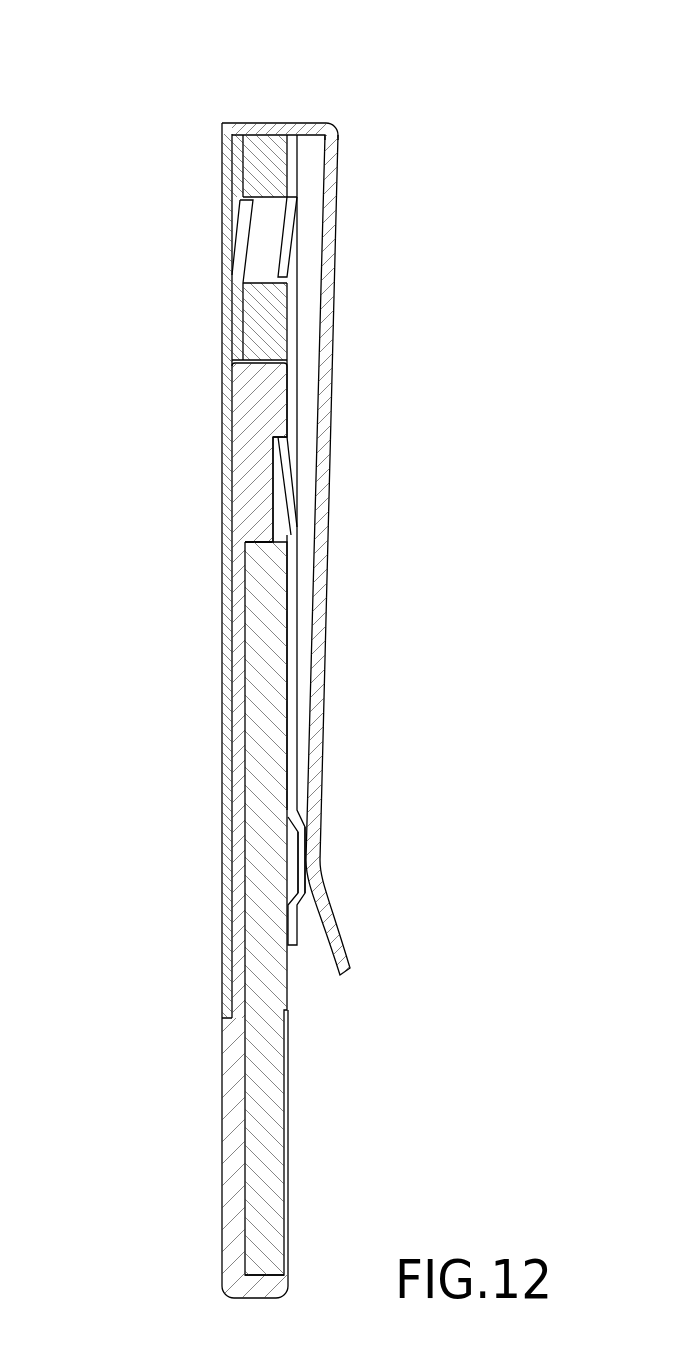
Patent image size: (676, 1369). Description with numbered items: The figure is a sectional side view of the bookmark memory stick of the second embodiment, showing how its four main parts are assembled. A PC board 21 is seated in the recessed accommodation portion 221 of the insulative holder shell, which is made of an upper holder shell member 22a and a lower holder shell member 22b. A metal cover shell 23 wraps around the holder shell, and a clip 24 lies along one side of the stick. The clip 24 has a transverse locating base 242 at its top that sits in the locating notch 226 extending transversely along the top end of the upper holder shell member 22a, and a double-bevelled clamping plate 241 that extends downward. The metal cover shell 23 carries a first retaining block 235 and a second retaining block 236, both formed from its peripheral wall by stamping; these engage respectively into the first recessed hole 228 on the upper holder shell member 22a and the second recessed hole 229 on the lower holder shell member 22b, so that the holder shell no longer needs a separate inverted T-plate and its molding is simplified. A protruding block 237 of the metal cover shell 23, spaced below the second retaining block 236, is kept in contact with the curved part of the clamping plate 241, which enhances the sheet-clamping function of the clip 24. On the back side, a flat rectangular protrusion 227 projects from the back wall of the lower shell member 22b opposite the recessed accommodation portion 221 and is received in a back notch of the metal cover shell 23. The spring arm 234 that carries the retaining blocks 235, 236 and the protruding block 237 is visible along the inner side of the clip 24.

The PC board 21 is at (254, 908).
The recessed accommodation portion 221 is at (245, 870).
The flat rectangular protrusion 227 is at (232, 1122).
The upper holder shell member 22a is at (194, 212).
The lower holder shell member 22b is at (188, 690).
The first recessed hole 228 is at (265, 240).
The second recessed hole 229 is at (280, 503).
The metal cover shell 23 is at (185, 710).
The clip 24 is at (346, 492).
The double-bevelled clamping plate 241 is at (318, 682).
The transverse locating base 242 is at (270, 127).
The locating notch 226 is at (323, 131).
The spring arm 234 is at (367, 540).
The first retaining block 235 is at (288, 238).
The second retaining block 236 is at (288, 483).
The protruding block 237 is at (300, 850).